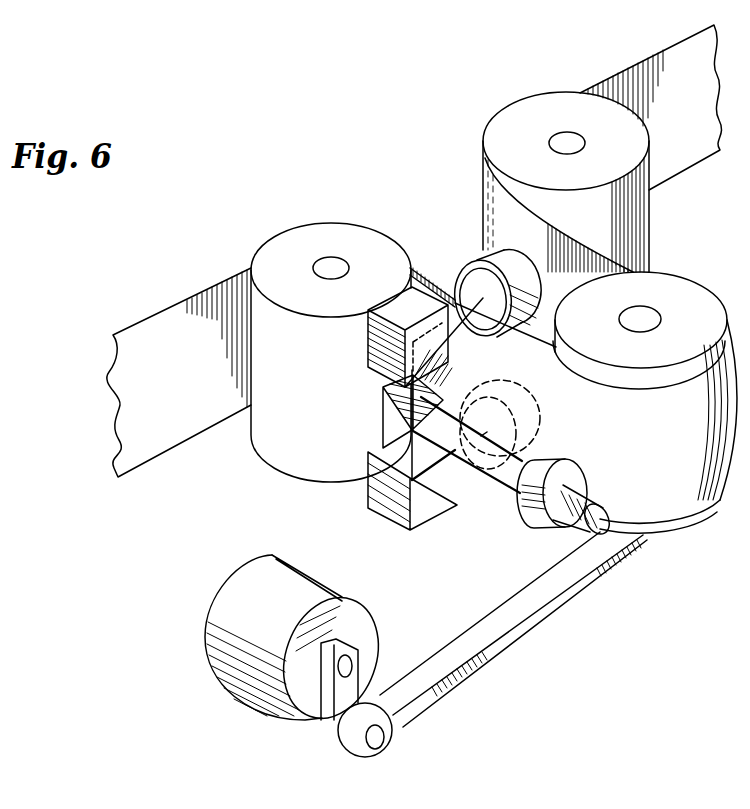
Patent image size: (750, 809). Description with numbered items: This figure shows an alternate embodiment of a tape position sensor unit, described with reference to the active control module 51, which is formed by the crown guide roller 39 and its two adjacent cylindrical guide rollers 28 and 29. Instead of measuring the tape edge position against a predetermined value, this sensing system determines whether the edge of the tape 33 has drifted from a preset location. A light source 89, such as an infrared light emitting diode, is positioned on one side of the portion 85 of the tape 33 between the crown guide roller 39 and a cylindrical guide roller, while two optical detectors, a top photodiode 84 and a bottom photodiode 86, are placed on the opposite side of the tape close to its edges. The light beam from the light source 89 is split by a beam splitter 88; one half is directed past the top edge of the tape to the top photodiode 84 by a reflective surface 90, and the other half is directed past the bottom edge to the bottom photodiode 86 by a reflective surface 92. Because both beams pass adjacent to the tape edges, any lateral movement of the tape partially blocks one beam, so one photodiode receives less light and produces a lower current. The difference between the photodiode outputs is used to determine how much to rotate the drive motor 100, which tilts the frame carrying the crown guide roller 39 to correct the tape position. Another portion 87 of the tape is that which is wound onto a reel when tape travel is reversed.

The cylindrical guide roller 28 is at (531, 112).
The cylindrical guide roller 29 is at (312, 240).
The tape 33 is at (166, 325).
The crown guide roller 39 is at (693, 300).
The active control module 51 is at (547, 632).
The top photodiode 84 is at (480, 283).
The portion of the tape 85 is at (535, 372).
The bottom photodiode 86 is at (468, 450).
The portion of the tape 87 is at (500, 208).
The beam splitter 88 is at (387, 417).
The light source 89 is at (557, 527).
The reflective surface 90 is at (383, 340).
The reflective surface 92 is at (385, 507).
The drive motor 100 is at (228, 603).